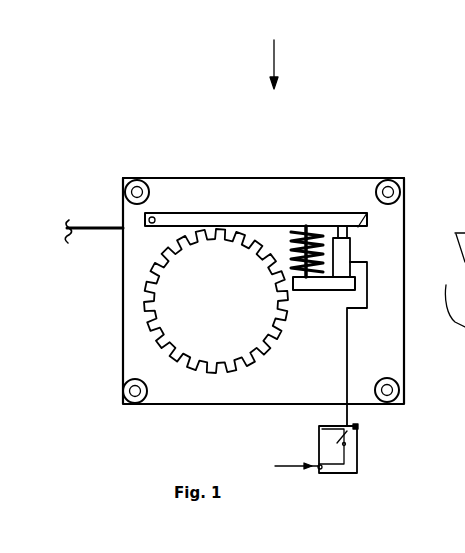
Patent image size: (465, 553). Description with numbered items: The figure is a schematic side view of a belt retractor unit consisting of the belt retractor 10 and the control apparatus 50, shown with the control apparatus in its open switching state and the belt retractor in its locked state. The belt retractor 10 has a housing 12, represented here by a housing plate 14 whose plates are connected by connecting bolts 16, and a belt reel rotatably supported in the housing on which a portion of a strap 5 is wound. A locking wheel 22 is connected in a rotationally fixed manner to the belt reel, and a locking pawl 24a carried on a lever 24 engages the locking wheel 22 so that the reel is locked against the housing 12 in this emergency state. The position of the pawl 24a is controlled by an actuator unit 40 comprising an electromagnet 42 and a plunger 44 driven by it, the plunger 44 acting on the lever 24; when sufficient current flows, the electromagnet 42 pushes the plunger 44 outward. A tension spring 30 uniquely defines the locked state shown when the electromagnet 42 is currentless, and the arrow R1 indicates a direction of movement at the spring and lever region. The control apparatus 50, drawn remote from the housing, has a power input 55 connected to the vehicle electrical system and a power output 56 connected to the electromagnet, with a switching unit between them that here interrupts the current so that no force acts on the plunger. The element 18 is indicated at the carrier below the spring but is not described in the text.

The strap 5 is at (95, 227).
The belt retractor 10 is at (322, 148).
The housing 12 is at (215, 188).
The housing plate 14 is at (170, 187).
The connecting bolts 16 is at (136, 181).
The carrier plate 18 is at (318, 284).
The locking wheel 22 is at (180, 308).
The lever 24 is at (257, 220).
The locking pawl 24a is at (208, 230).
The tension spring 30 is at (307, 230).
The actuator unit 40 is at (348, 242).
The electromagnet 42 is at (348, 252).
The plunger 44 is at (359, 227).
The control apparatus 50 is at (354, 449).
The power input 55 is at (321, 469).
The power output 56 is at (356, 428).
The direction of rotation R1 is at (288, 57).